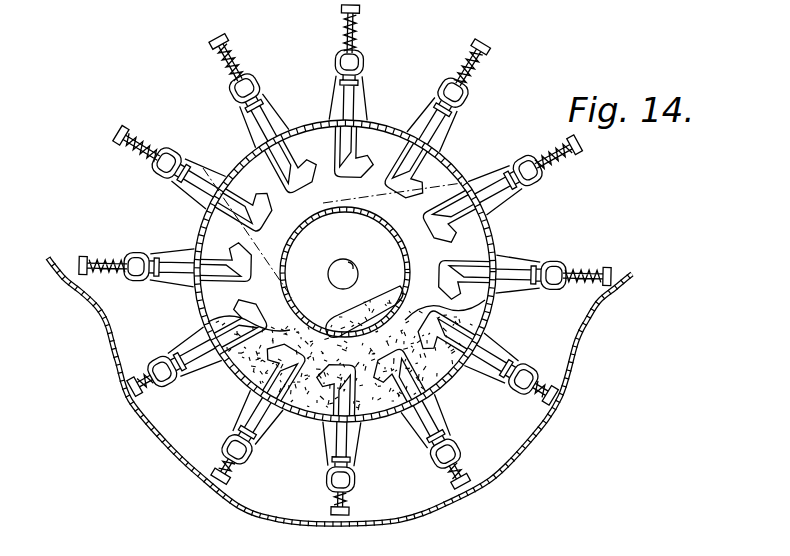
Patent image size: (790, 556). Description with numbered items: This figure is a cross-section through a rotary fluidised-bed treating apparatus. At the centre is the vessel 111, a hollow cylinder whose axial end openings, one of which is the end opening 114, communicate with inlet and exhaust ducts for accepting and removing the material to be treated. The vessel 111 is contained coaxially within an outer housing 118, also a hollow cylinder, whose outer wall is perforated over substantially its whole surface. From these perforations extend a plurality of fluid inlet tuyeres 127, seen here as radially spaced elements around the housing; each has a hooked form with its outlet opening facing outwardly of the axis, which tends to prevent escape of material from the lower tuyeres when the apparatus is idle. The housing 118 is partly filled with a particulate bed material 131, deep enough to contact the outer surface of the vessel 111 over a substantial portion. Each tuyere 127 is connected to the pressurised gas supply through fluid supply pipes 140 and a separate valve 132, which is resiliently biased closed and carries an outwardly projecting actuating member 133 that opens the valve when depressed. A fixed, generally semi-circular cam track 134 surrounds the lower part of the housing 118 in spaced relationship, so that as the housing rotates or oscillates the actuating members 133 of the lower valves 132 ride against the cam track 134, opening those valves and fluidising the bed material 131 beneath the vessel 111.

The vessel 111 is at (416, 262).
The end opening 114 is at (349, 261).
The outer housing 118 is at (388, 118).
The fluid inlet tuyere 127 is at (438, 208).
The particulate bed material 131 is at (445, 390).
The valve 132 is at (508, 270).
The actuating member 133 is at (484, 44).
The cam track 134 is at (103, 333).
The fluid supply pipe 140 is at (336, 62).